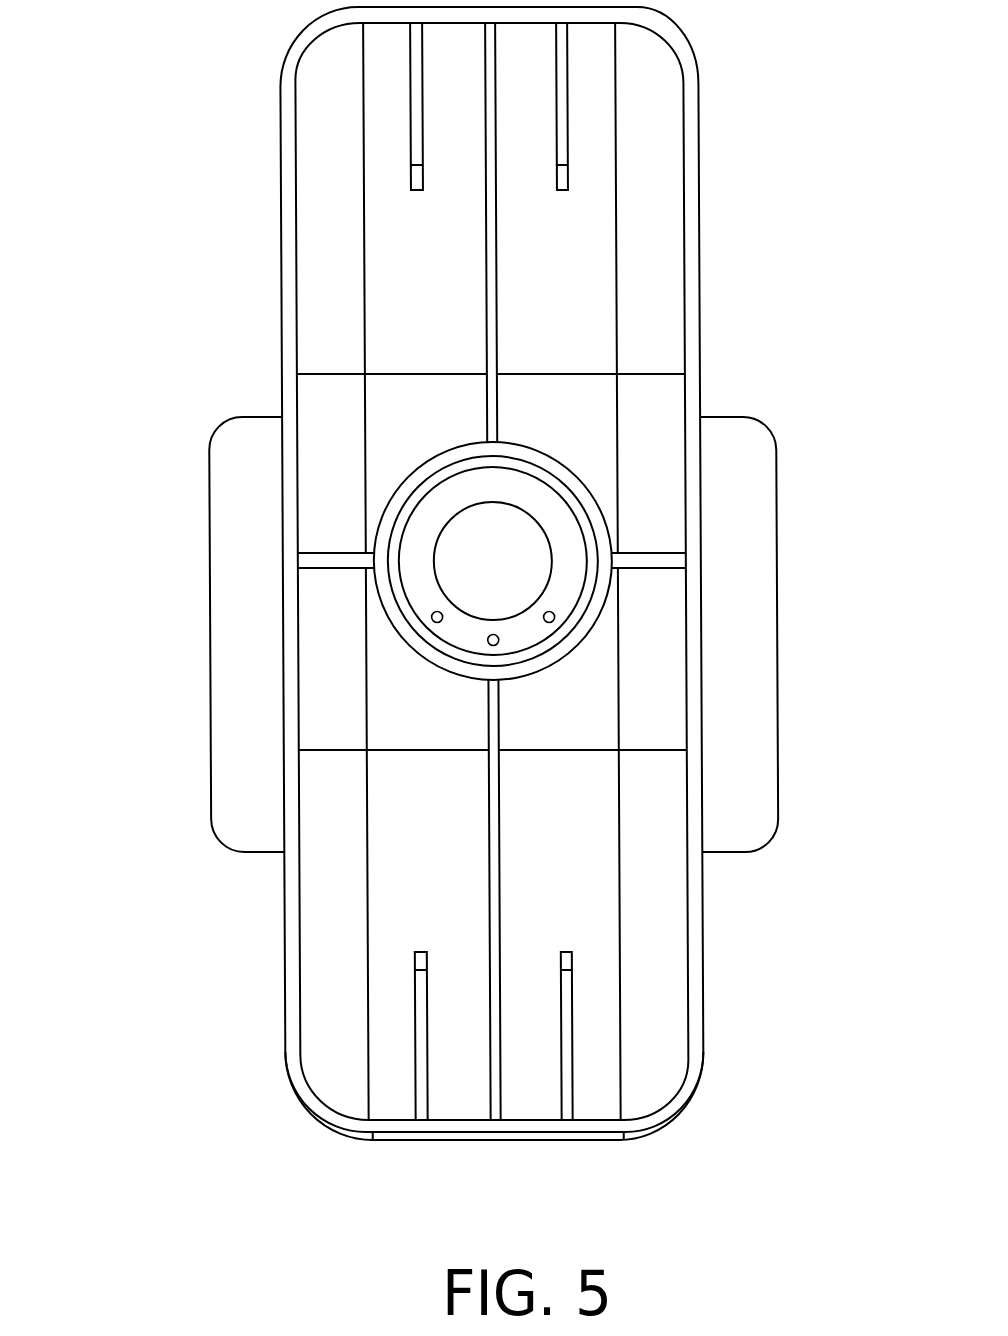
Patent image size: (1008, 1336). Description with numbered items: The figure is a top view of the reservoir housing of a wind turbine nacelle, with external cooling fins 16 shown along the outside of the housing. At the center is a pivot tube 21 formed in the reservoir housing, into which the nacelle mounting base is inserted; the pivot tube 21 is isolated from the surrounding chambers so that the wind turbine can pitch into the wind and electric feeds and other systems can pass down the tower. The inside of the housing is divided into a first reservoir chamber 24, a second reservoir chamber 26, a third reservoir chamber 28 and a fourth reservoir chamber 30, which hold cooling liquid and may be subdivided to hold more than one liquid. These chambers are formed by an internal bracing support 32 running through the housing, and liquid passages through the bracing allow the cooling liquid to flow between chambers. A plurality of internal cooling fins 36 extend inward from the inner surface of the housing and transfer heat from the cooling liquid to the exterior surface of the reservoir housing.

The external cooling fins 16 is at (235, 777).
The pivot tube 21 is at (520, 585).
The first reservoir chamber 24 is at (402, 884).
The second reservoir chamber 26 is at (588, 893).
The third reservoir chamber 28 is at (385, 226).
The fourth reservoir chamber 30 is at (578, 243).
The internal bracing support 32 is at (490, 273).
The internal cooling fins 36 is at (410, 147).